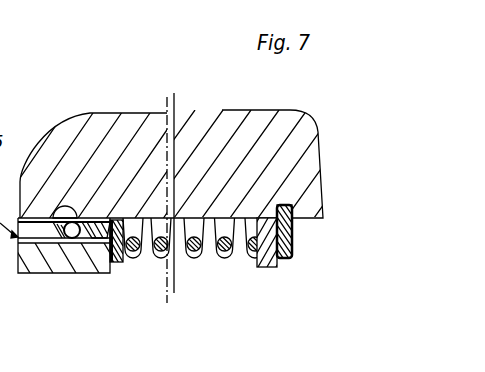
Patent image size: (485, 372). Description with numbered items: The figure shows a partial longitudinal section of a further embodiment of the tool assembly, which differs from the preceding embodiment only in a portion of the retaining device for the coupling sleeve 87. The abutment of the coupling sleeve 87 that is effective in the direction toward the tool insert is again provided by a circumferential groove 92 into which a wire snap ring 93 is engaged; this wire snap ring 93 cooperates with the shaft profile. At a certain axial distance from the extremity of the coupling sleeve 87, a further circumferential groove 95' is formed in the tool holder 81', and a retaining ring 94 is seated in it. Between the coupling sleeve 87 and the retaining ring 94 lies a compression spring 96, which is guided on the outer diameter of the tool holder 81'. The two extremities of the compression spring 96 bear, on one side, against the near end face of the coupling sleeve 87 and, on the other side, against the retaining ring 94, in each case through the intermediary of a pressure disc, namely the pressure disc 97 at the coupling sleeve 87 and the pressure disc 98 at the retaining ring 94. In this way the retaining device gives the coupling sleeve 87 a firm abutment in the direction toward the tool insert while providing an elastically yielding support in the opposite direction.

The tool holder 81' is at (195, 139).
The circumferential groove 95' is at (321, 188).
The retaining ring 94 is at (294, 247).
The pressure disc 98 is at (267, 268).
The compression spring 96 is at (193, 255).
The pressure disc 97 is at (120, 262).
The wire snap ring 93 is at (74, 234).
The circumferential groove 92 is at (54, 230).
The coupling sleeve 87 is at (35, 255).